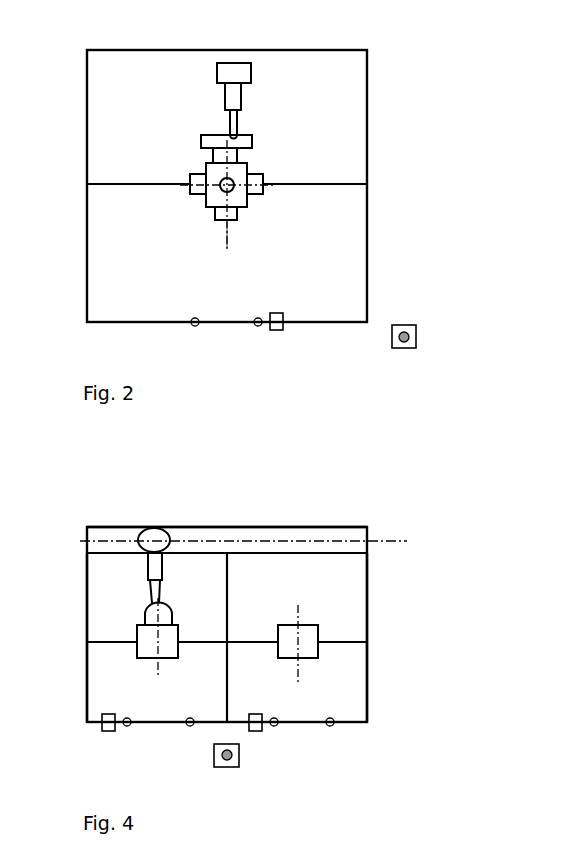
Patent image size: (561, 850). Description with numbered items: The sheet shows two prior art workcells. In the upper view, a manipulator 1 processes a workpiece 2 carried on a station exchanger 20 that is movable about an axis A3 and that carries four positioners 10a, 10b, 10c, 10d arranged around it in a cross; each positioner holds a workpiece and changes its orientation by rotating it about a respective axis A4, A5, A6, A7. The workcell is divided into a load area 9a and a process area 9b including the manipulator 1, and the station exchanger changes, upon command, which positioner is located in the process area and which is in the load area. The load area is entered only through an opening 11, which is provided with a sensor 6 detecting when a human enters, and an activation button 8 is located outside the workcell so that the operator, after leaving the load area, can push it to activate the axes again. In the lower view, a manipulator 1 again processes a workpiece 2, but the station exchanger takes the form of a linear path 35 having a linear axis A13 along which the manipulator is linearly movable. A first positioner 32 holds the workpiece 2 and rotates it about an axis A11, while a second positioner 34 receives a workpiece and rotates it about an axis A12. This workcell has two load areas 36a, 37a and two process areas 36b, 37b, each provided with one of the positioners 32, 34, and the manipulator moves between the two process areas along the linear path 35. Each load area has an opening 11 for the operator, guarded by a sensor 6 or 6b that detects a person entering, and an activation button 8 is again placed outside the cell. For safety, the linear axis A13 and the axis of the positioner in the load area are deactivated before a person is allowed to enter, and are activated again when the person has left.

In FIG. 2, the manipulator 1 is at (233, 65).
In FIG. 4, the manipulator 1 is at (153, 530).
In FIG. 2, the workpiece 2 is at (250, 133).
In FIG. 4, the workpiece 2 is at (145, 617).
In FIG. 2, the sensor 6 is at (282, 330).
In FIG. 4, the sensor 6 is at (258, 733).
In FIG. 4, the sensor 6b is at (108, 732).
In FIG. 2, the activation button 8 is at (404, 350).
In FIG. 4, the activation button 8 is at (228, 770).
In FIG. 2, the load area 9a is at (330, 293).
In FIG. 2, the process area 9b is at (318, 56).
In FIG. 2, the positioner 10a is at (193, 176).
In FIG. 2, the positioner 10b is at (217, 152).
In FIG. 2, the positioner 10c is at (263, 178).
In FIG. 2, the positioner 10d is at (215, 214).
In FIG. 2, the opening 11 is at (236, 325).
In FIG. 4, the opening 11 is at (152, 725).
In FIG. 2, the station exchanger 20 is at (250, 205).
In FIG. 4, the first positioner 32 is at (147, 636).
In FIG. 4, the second positioner 34 is at (310, 635).
In FIG. 4, the linear path 35 is at (332, 536).
In FIG. 4, the load area 36a is at (115, 700).
In FIG. 4, the process area 36b is at (115, 575).
In FIG. 4, the load area 37a is at (342, 692).
In FIG. 4, the process area 37b is at (342, 582).
In FIG. 2, the axis A3 is at (232, 180).
In FIG. 2, the axis A4 is at (263, 193).
In FIG. 2, the axis A5 is at (226, 238).
In FIG. 2, the axis A6 is at (198, 198).
In FIG. 2, the axis A7 is at (227, 125).
In FIG. 4, the axis A11 is at (158, 670).
In FIG. 4, the axis A12 is at (298, 672).
In FIG. 4, the linear axis A13 is at (382, 541).